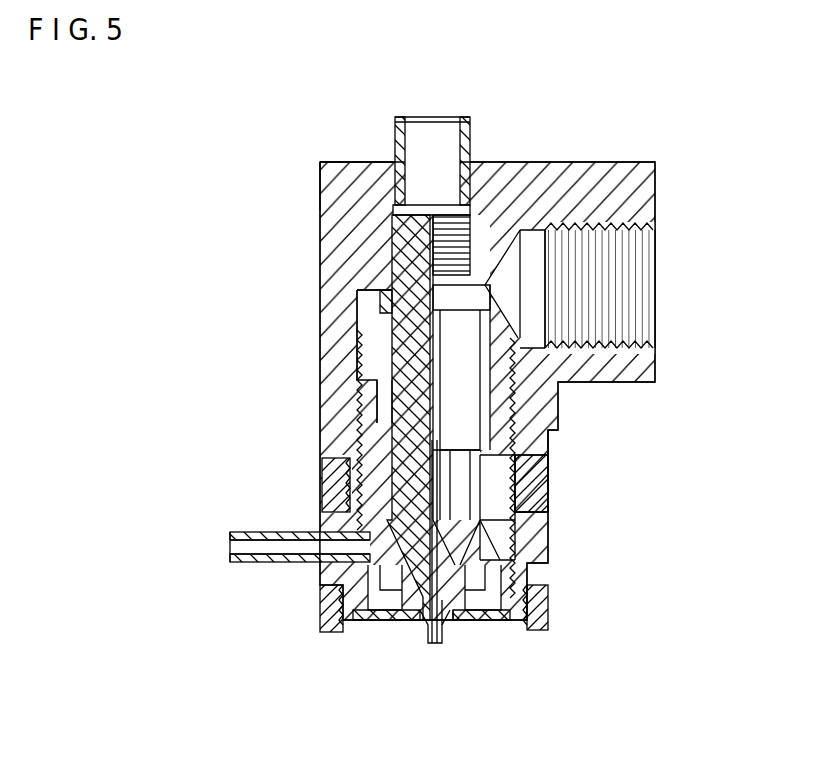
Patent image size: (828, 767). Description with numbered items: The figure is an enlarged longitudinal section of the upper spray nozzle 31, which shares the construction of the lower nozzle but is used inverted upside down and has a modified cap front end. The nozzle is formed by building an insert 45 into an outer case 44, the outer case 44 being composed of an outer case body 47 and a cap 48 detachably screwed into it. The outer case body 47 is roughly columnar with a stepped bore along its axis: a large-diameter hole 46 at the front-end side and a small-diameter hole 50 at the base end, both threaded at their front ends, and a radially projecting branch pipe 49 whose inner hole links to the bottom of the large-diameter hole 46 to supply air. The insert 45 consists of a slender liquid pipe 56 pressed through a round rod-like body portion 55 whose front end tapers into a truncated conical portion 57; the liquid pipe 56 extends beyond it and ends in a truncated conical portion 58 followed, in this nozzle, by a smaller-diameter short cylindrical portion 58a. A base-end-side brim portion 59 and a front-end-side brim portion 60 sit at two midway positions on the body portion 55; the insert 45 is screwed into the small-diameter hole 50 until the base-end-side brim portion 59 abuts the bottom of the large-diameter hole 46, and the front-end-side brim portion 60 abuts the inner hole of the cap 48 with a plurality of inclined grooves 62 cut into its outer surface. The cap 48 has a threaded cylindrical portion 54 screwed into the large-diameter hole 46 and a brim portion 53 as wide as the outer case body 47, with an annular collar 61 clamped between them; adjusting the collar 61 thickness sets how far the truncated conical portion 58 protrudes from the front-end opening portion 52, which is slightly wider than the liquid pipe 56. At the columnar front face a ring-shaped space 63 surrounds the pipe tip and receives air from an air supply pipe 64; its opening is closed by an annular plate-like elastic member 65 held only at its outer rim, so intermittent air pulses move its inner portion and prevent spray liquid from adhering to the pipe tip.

The upper spray nozzle 31 is at (668, 163).
The outer case 44 is at (312, 205).
The insert 45 is at (380, 325).
The large-diameter hole 46 is at (356, 337).
The outer case body 47 is at (325, 180).
The cap 48 is at (538, 540).
The branch pipe 49 is at (570, 170).
The small-diameter hole 50 is at (393, 232).
The front-end opening portion 52 is at (450, 622).
The brim portion 53 is at (538, 530).
The cylindrical portion 54 is at (527, 410).
The body portion 55 is at (510, 345).
The liquid pipe 56 is at (402, 378).
The truncated conical portion 57 is at (455, 540).
The truncated conical portion 58 is at (425, 620).
The smaller-diameter short cylindrical portion 58a is at (436, 640).
The base-end-side brim portion 59 is at (357, 293).
The front-end-side brim portion 60 is at (480, 442).
The annular collar 61 is at (322, 472).
The inclined grooves 62 is at (445, 445).
The ring-shaped space 63 is at (500, 590).
The air supply pipe 64 is at (276, 568).
The elastic member 65 is at (495, 625).